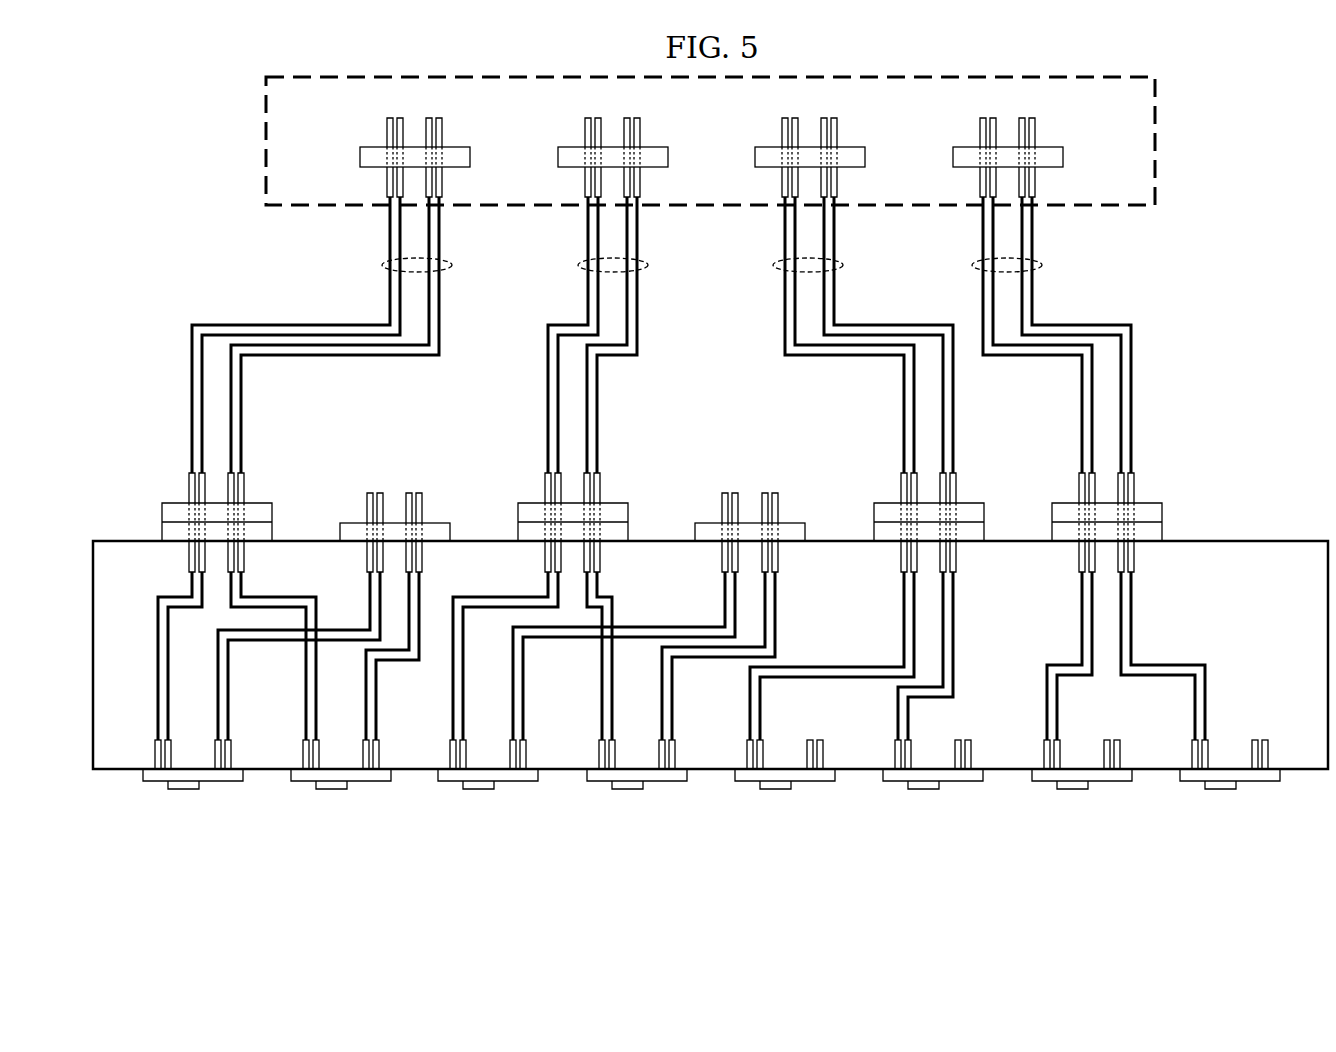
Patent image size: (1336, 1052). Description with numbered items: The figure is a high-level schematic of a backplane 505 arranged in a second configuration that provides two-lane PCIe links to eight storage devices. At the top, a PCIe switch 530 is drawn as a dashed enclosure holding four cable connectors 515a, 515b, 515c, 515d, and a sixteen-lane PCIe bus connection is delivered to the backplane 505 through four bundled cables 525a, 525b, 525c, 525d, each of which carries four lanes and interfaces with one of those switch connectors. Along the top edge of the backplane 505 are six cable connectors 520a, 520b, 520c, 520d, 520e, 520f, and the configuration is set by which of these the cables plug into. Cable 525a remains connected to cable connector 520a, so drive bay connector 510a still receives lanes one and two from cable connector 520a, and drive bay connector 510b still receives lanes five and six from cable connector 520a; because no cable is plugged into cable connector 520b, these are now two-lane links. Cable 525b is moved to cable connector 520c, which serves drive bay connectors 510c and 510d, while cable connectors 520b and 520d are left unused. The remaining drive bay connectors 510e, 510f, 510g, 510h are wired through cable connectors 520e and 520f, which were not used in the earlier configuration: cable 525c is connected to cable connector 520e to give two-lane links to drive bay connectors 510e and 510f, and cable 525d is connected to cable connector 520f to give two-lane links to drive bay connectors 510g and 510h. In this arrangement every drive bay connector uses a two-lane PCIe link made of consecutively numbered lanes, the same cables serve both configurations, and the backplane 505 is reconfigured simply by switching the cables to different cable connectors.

The backplane 505 is at (1267, 541).
The drive bay connector 510a is at (183, 789).
The drive bay connector 510b is at (331, 789).
The drive bay connector 510c is at (478, 789).
The drive bay connector 510d is at (627, 789).
The drive bay connector 510e is at (775, 789).
The drive bay connector 510f is at (923, 789).
The drive bay connector 510g is at (1072, 789).
The drive bay connector 510h is at (1220, 789).
The cable connector 515a is at (360, 157).
The cable connector 515b is at (558, 157).
The cable connector 515c is at (865, 157).
The cable connector 515d is at (1063, 157).
The cable connector 520a is at (162, 517).
The cable connector 520b is at (343, 523).
The cable connector 520c is at (521, 503).
The cable connector 520d is at (804, 523).
The cable connector 520e is at (983, 503).
The cable connector 520f is at (1162, 517).
The bundled cable 525a is at (382, 266).
The bundled cable 525b is at (578, 266).
The bundled cable 525c is at (843, 266).
The bundled cable 525d is at (1042, 266).
The PCIe switch 530 is at (266, 128).